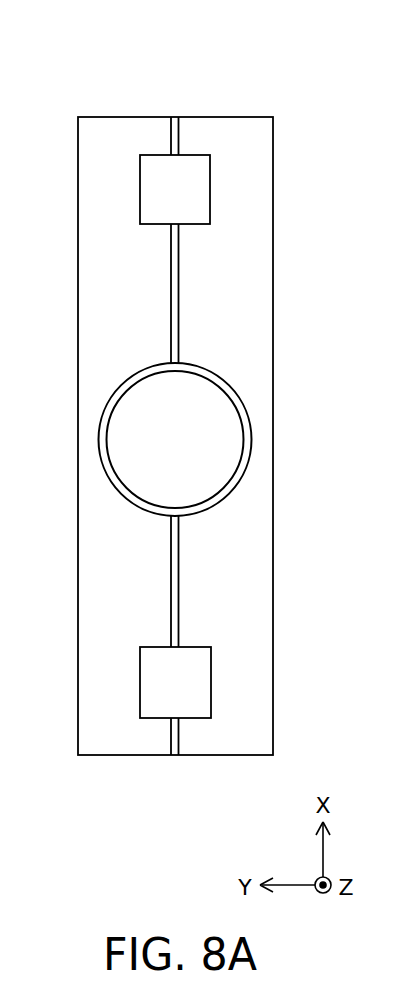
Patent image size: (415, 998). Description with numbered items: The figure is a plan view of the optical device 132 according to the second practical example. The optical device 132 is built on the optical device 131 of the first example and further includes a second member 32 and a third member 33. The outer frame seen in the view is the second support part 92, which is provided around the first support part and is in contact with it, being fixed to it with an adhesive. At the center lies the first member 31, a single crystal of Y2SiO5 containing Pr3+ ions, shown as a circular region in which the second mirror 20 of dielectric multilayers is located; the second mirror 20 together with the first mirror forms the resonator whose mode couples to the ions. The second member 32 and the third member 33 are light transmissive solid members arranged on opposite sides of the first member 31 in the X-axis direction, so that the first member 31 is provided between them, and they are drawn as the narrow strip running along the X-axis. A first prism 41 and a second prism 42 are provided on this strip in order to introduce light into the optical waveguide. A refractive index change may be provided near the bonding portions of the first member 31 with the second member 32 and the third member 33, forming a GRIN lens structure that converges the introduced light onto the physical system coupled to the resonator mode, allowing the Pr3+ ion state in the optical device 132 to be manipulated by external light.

The optical device 132 is at (286, 86).
The second member 32 is at (177, 137).
The third member 33 is at (177, 733).
The first prism 41 is at (192, 188).
The second prism 42 is at (192, 682).
The second support part 92 is at (237, 282).
The optical device 131 is at (245, 390).
The first member 31 is at (247, 442).
The second mirror 20 is at (138, 442).